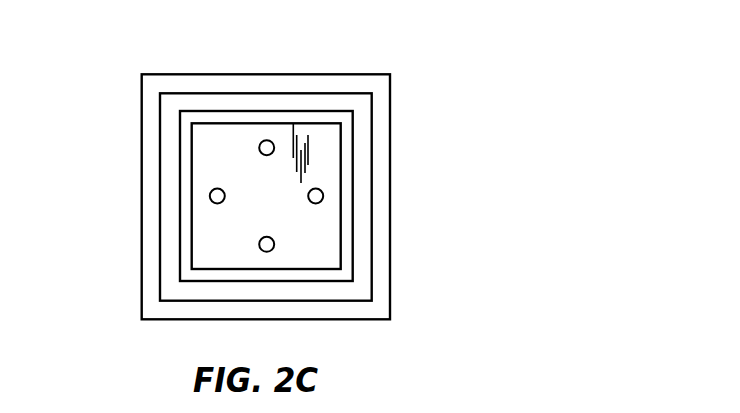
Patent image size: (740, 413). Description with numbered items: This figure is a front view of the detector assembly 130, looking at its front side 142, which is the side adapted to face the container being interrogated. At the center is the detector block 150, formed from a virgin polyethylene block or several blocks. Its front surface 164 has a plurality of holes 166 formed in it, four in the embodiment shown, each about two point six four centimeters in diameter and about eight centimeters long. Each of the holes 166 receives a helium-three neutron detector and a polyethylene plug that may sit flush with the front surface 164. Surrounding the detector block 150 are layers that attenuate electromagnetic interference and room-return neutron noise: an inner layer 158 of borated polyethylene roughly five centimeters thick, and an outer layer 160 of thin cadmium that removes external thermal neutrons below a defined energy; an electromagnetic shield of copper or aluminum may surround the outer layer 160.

The detector assembly 130 is at (470, 92).
The front side 142 is at (230, 74).
The outer layer 160 is at (153, 113).
The inner layer 158 is at (362, 193).
The detector block 150 is at (325, 246).
The front surface 164 is at (282, 210).
The holes 166 is at (259, 148).